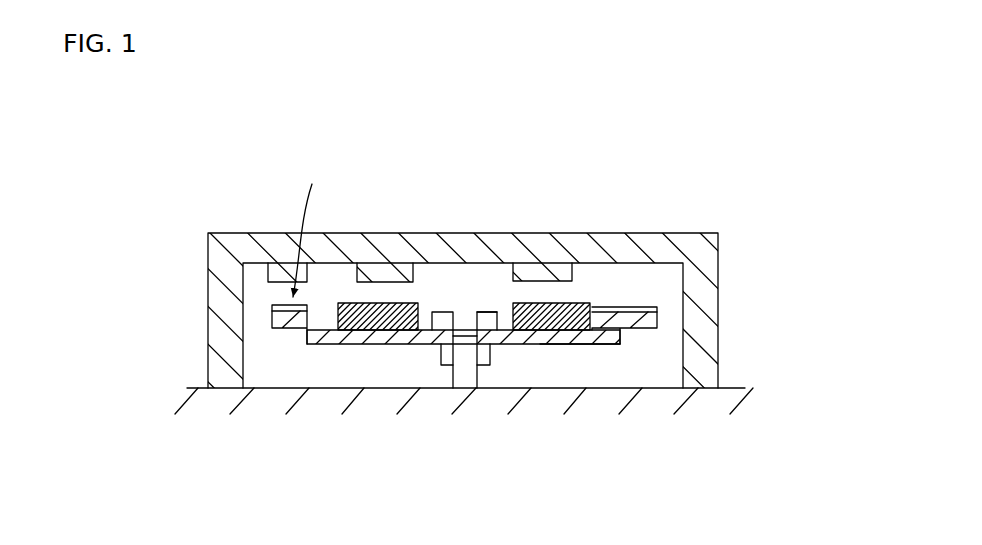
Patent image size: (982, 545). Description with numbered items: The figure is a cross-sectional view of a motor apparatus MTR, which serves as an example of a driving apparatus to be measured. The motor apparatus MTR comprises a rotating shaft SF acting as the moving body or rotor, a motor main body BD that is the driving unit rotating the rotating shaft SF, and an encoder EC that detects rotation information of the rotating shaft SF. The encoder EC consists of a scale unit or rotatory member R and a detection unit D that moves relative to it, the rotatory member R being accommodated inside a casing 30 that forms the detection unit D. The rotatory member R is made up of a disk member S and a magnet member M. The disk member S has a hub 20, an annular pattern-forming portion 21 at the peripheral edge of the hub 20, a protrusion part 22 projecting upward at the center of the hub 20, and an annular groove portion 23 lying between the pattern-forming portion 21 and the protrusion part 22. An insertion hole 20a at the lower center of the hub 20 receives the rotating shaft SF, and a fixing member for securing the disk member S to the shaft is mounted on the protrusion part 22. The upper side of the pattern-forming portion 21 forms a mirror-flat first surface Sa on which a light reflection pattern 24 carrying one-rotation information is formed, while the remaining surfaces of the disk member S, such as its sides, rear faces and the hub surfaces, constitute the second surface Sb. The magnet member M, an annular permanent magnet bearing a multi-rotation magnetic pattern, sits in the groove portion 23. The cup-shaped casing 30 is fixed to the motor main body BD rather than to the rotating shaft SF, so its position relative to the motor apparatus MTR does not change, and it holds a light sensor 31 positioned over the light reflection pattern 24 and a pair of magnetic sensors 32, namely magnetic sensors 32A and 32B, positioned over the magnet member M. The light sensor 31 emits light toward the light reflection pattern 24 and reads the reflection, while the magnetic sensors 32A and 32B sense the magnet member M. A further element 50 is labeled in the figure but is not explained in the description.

The motor apparatus MTR is at (183, 130).
The encoder EC is at (665, 183).
The detection unit D is at (717, 227).
The casing 30 is at (222, 233).
The scale unit R is at (642, 283).
The light sensor 31 is at (287, 263).
The magnetic sensor 32 is at (480, 225).
The magnetic sensor 32A is at (388, 263).
The magnetic sensor 32B is at (532, 263).
The light reflection pattern 24 is at (308, 228).
The disk member S is at (665, 312).
The first surface Sa is at (627, 306).
The second surface Sb is at (617, 346).
The pattern-forming portion 21 is at (303, 335).
The base plate 50 is at (347, 345).
The magnet member M is at (583, 302).
The groove portion 23 is at (427, 325).
The protrusion part 22 is at (487, 312).
The rotating shaft SF is at (462, 382).
The hub 20 is at (440, 355).
The insertion hole 20a is at (472, 360).
The motor main body BD is at (198, 387).